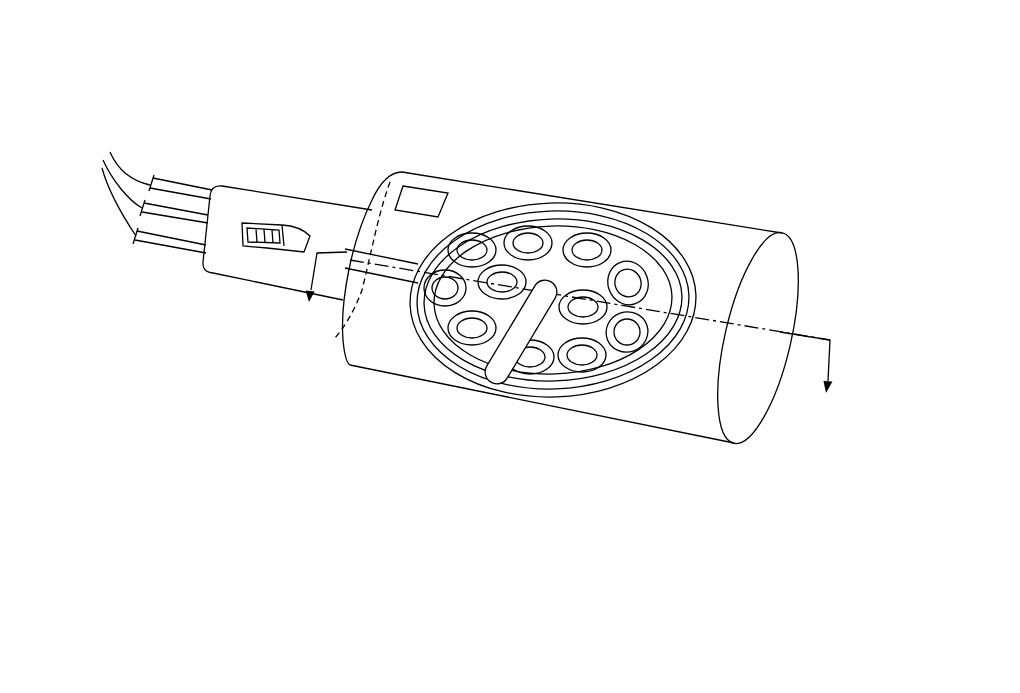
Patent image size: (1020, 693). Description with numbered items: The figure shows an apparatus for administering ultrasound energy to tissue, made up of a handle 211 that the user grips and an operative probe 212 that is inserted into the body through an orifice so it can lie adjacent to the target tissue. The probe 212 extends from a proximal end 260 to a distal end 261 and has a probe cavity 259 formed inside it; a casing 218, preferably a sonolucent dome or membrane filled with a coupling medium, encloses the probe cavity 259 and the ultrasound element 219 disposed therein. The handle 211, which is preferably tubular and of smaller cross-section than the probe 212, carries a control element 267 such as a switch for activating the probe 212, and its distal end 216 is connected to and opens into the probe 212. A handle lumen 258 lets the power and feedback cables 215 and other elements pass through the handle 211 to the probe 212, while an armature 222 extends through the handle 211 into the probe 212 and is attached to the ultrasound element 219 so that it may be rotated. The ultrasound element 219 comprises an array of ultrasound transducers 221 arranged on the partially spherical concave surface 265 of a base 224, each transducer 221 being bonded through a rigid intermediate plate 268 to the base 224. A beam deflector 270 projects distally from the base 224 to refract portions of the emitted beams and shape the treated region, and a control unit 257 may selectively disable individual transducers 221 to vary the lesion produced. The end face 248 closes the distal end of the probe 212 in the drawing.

The handle 211 is at (284, 157).
The operative probe 212 is at (690, 187).
The power and feedback cables 215 is at (131, 197).
The distal end of the handle 216 is at (330, 308).
The casing 218 is at (470, 180).
The ultrasound element 219 is at (620, 225).
The ultrasound transducers 221 is at (557, 387).
The armature 222 is at (386, 280).
The base 224 is at (700, 262).
The end face 248 is at (773, 273).
The control unit 257 is at (415, 197).
The handle lumen 258 is at (376, 226).
The probe cavity 259 is at (678, 390).
The proximal end 260 is at (232, 161).
The distal end 261 is at (814, 206).
The partially spherical concave surface 265 is at (557, 222).
The control element 267 is at (260, 250).
The intermediate plate 268 is at (643, 220).
The beam deflector 270 is at (512, 388).